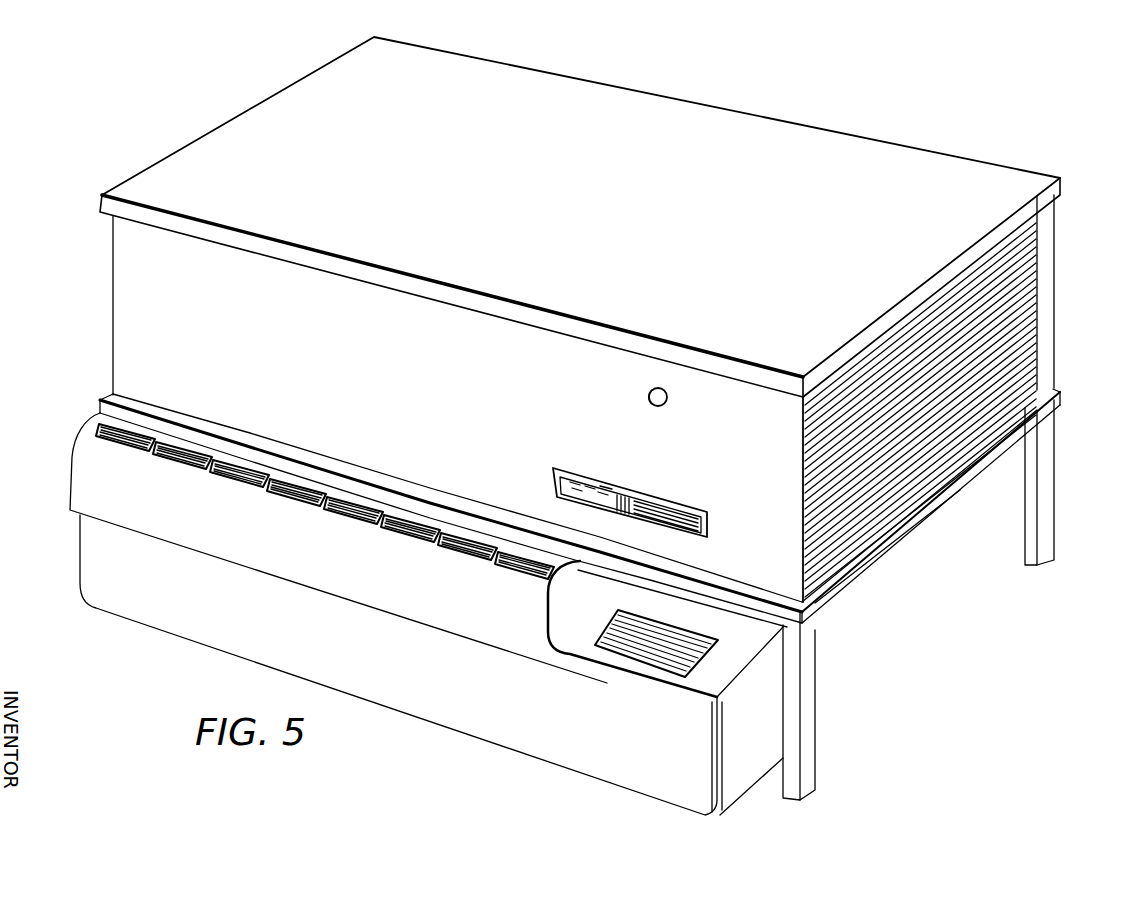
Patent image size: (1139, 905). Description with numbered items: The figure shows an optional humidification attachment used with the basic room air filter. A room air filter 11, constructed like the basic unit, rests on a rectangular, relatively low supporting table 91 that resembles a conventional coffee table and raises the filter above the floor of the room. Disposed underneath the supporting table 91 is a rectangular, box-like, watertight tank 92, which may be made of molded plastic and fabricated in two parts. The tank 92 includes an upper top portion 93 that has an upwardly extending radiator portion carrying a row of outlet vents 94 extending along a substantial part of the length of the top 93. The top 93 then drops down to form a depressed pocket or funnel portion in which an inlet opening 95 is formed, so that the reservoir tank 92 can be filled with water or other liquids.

The room air filter 11 is at (763, 405).
The supporting table 91 is at (1047, 452).
The watertight tank 92 is at (520, 653).
The upper top portion 93 is at (360, 550).
The outlet vents 94 is at (110, 430).
The inlet opening 95 is at (682, 642).